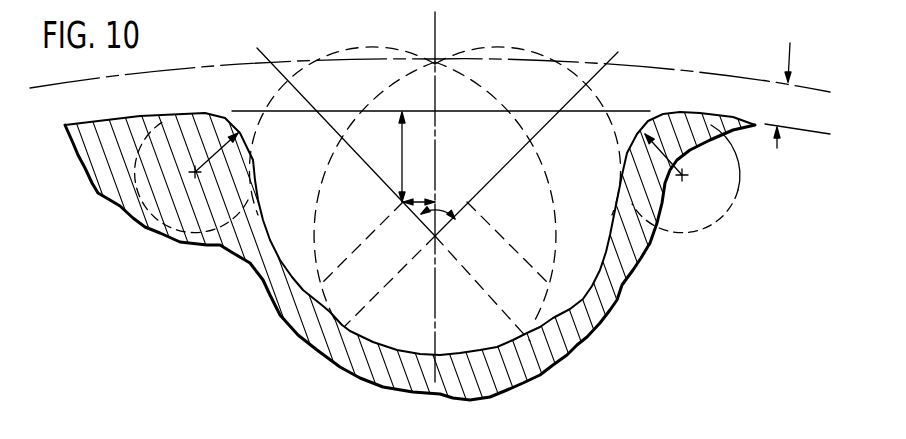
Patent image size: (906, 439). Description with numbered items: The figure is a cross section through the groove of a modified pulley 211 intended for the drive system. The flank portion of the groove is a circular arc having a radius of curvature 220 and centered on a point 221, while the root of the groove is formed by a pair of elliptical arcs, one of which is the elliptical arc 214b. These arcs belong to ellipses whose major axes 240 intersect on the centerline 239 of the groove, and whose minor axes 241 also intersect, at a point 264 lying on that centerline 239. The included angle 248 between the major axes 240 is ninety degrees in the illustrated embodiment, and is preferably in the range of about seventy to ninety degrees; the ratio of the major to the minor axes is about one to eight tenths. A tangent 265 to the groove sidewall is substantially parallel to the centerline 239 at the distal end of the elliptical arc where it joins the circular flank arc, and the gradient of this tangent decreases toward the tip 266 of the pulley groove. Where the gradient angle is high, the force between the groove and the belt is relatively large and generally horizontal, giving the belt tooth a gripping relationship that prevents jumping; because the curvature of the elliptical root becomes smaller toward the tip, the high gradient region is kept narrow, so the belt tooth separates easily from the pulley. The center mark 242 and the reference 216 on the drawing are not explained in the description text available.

The pulley 211 is at (447, 260).
The elliptical arc 214b is at (567, 280).
The top surface line 216 is at (652, 112).
The radius of curvature 220 is at (650, 157).
The point 221 is at (704, 147).
The centerline 239 is at (437, 42).
The major axes 240 is at (405, 276).
The minor axes 241 is at (338, 270).
The center point 242 is at (441, 237).
The included angle 248 is at (442, 193).
The point 264 is at (442, 165).
The tangent 265 is at (618, 135).
The tip 266 is at (412, 388).